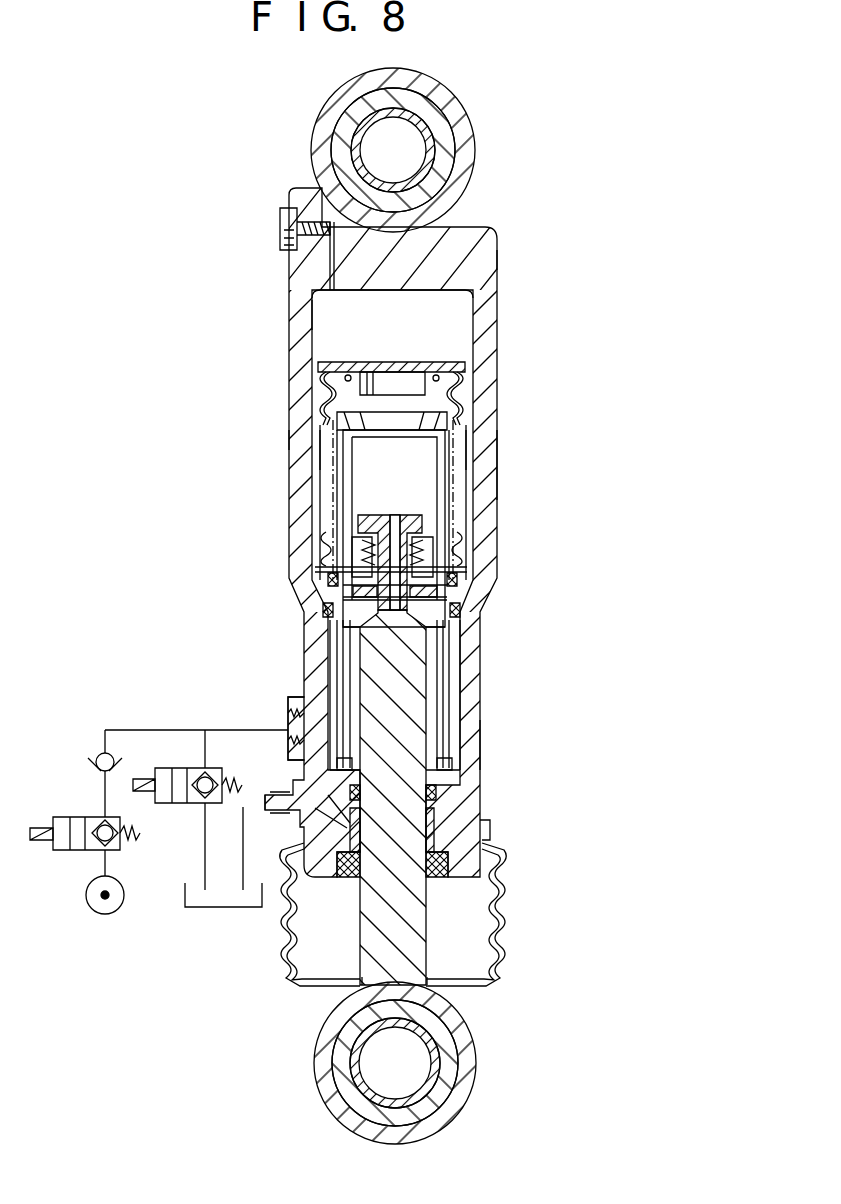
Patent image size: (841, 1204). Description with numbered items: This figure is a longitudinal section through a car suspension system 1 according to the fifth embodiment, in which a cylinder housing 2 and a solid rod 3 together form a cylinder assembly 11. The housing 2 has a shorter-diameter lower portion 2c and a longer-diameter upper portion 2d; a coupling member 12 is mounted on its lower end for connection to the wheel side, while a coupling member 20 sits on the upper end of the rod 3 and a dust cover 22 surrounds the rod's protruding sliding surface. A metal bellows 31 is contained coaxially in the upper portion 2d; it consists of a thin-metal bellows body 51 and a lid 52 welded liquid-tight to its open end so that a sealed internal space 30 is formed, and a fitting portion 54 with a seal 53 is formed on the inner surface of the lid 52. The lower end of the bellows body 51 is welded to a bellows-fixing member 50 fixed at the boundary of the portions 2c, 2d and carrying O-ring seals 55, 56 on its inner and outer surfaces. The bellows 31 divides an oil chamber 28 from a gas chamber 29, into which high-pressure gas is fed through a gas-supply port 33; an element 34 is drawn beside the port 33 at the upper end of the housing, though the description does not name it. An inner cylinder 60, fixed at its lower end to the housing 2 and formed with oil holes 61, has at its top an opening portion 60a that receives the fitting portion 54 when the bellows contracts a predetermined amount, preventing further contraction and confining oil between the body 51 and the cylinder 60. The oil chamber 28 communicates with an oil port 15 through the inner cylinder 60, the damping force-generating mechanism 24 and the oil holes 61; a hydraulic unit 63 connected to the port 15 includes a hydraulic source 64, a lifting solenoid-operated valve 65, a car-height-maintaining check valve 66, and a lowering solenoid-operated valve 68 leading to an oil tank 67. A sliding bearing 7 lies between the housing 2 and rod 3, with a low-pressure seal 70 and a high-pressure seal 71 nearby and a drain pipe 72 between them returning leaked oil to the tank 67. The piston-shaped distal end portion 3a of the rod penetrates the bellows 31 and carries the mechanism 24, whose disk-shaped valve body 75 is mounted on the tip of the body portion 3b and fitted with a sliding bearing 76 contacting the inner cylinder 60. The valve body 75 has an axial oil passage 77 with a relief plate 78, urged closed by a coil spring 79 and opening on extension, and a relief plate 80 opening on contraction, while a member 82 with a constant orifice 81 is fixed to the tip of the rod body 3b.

The car suspension system 1 is at (527, 240).
The cylinder housing 2 is at (498, 322).
The shorter-diameter lower portion 2c is at (481, 745).
The longer-diameter upper portion 2d is at (498, 466).
The rod 3 is at (410, 968).
The distal end portion 3a is at (357, 630).
The body portion 3b is at (428, 722).
The sliding bearing 7 is at (444, 822).
The cylinder assembly 11 is at (245, 440).
The coupling member 12 is at (320, 1052).
The oil port 15 is at (288, 718).
The coupling member 20 is at (476, 152).
The dust cover 22 is at (510, 905).
The damping force-generating mechanism 24 is at (345, 500).
The oil chamber 28 is at (330, 398).
The gas chamber 29 is at (318, 305).
The sealed internal space 30 is at (450, 375).
The metal bellows 31 is at (470, 408).
The gas-supply port 33 is at (330, 278).
The bolt 34 is at (280, 232).
The bellows-fixing member 50 is at (452, 612).
The bellows body 51 is at (465, 383).
The lid 52 is at (418, 362).
The seal 53 is at (348, 372).
The fitting portion 54 is at (380, 380).
The seal 55 is at (452, 574).
The seal 56 is at (458, 640).
The inner cylinder 60 is at (447, 522).
The opening portion 60a is at (385, 420).
The oil holes 61 is at (452, 757).
The hydraulic unit 63 is at (145, 712).
The hydraulic source 64 is at (105, 915).
The solenoid-operated valve 65 is at (65, 850).
The check valve 66 is at (96, 752).
The oil tank 67 is at (225, 907).
The solenoid-operated valve 68 is at (185, 803).
The low-pressure seal 70 is at (447, 878).
The high-pressure seal 71 is at (437, 790).
The drain pipe 72 is at (338, 870).
The valve body 75 is at (440, 590).
The sliding bearing 76 is at (466, 545).
The oil passage 77 is at (340, 592).
The relief plate 78 is at (340, 568).
The coil spring 79 is at (352, 531).
The relief plate 80 is at (335, 614).
The constant orifice 81 is at (393, 515).
The member 82 is at (410, 520).